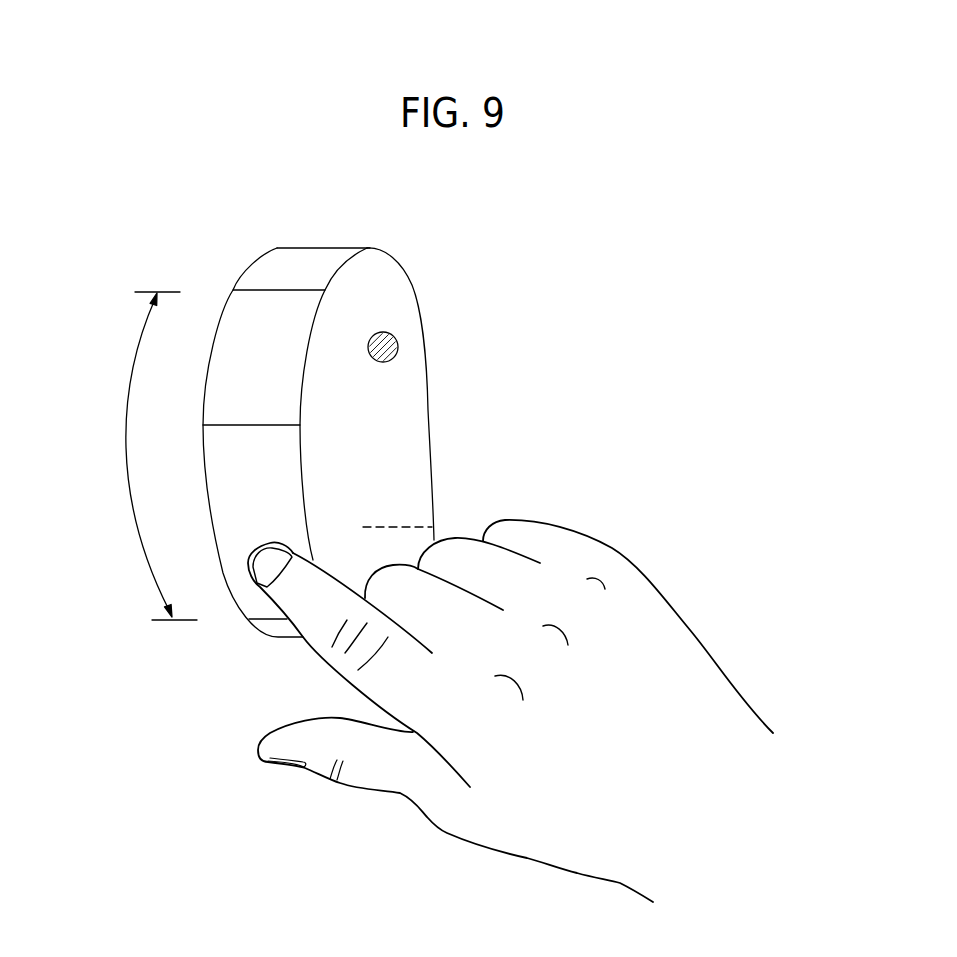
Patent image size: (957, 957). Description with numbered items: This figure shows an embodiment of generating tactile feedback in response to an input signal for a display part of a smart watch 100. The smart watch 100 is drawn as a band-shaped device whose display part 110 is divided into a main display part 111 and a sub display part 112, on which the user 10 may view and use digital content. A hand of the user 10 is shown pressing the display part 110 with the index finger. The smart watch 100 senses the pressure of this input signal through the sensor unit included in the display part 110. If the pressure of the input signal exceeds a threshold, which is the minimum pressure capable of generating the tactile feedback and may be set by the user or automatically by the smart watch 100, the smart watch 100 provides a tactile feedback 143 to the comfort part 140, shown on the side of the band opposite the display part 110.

The smart watch 100 is at (249, 263).
The display part 110 is at (127, 441).
The main display part 111 is at (258, 591).
The sub display part 112 is at (235, 328).
The comfort part 140 is at (398, 418).
The tactile feedback 143 is at (398, 347).
The user 10 is at (643, 578).